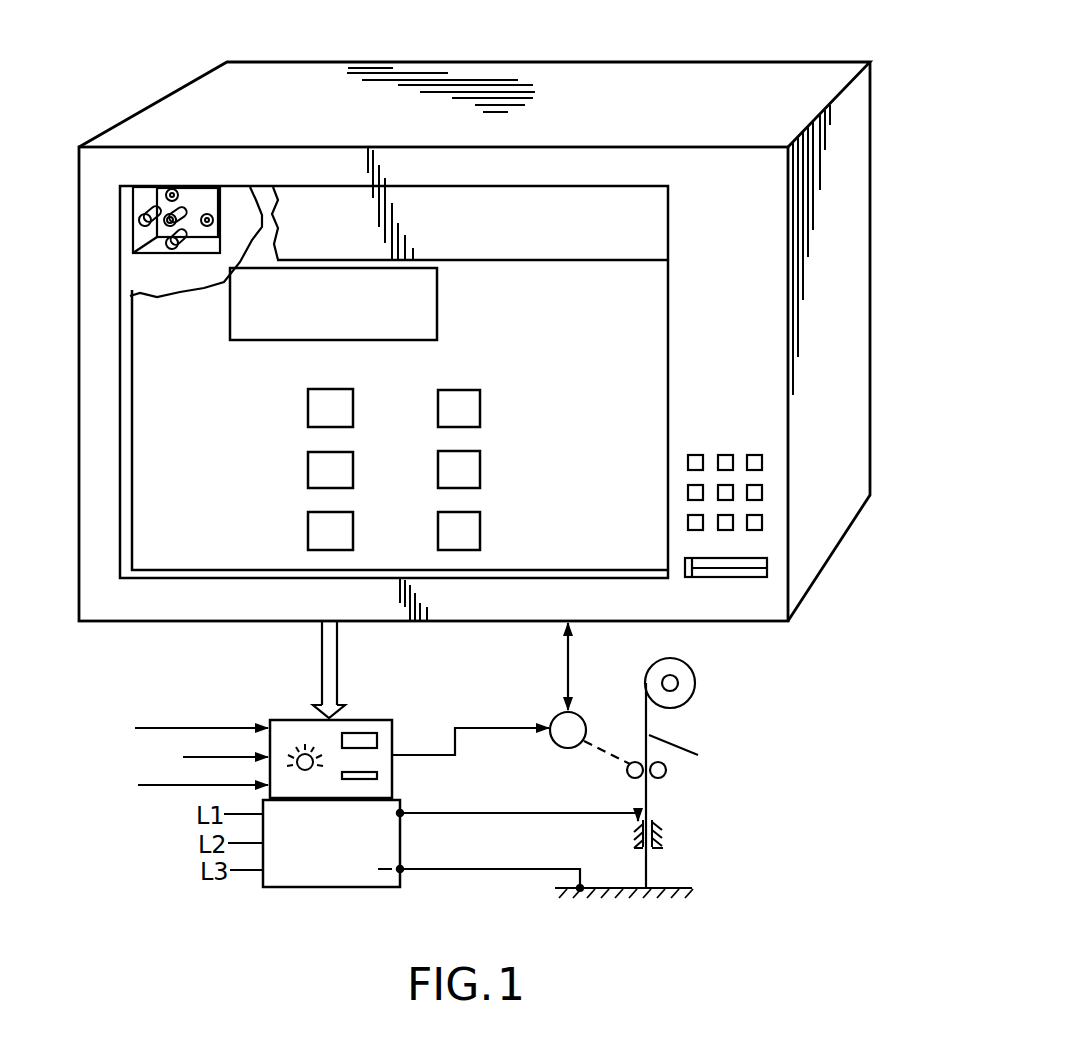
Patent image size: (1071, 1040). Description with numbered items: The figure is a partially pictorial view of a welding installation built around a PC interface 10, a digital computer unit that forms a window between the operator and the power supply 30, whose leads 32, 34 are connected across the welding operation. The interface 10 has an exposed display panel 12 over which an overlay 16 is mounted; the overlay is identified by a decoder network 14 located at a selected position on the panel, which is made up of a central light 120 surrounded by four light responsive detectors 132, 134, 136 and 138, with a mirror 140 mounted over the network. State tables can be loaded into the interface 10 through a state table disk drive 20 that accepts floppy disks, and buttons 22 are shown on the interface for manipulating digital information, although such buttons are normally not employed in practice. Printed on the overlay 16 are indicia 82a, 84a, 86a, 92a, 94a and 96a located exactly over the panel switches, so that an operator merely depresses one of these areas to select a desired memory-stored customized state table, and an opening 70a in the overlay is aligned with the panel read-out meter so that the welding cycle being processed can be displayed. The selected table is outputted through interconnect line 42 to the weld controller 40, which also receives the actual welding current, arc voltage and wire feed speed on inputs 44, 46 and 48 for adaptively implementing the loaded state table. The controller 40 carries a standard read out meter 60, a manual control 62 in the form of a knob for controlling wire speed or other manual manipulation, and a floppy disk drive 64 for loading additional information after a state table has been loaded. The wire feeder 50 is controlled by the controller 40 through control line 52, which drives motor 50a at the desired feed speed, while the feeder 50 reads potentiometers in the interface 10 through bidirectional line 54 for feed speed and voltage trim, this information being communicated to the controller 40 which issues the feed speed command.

The PC interface 10 is at (702, 64).
The display panel 12 is at (129, 185).
The decoder network 14 is at (198, 183).
The overlay 16 is at (650, 309).
The state table disk drive 20 is at (742, 578).
The buttons 22 is at (728, 452).
The power supply 30 is at (323, 880).
The lead 32 is at (527, 812).
The lead 34 is at (507, 867).
The weld controller 40 is at (389, 716).
The interconnect line 42 is at (321, 642).
The input line 44 is at (243, 727).
The input line 46 is at (233, 755).
The input line 48 is at (190, 785).
The wire feeder 50 is at (695, 717).
The motor 50a is at (584, 716).
The control line 52 is at (498, 732).
The bidirectional line 54 is at (566, 663).
The read out meter 60 is at (349, 735).
The manual control 62 is at (300, 752).
The floppy disk drive 64 is at (352, 780).
The opening 70a is at (438, 312).
The indicia 82a is at (318, 410).
The indicia 84a is at (318, 472).
The indicia 86a is at (318, 532).
The indicia 92a is at (470, 405).
The indicia 94a is at (472, 470).
The indicia 96a is at (472, 533).
The central light 120 is at (186, 212).
The light responsive detector 132 is at (174, 189).
The light responsive detector 134 is at (117, 158).
The light responsive detector 136 is at (173, 250).
The light responsive detector 138 is at (213, 221).
The mirror 140 is at (582, 243).